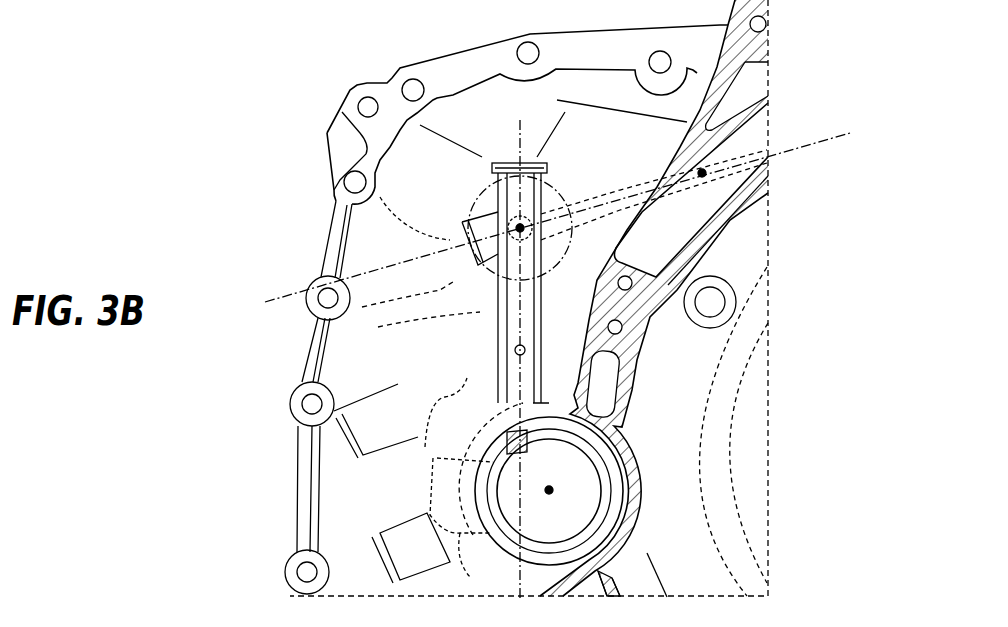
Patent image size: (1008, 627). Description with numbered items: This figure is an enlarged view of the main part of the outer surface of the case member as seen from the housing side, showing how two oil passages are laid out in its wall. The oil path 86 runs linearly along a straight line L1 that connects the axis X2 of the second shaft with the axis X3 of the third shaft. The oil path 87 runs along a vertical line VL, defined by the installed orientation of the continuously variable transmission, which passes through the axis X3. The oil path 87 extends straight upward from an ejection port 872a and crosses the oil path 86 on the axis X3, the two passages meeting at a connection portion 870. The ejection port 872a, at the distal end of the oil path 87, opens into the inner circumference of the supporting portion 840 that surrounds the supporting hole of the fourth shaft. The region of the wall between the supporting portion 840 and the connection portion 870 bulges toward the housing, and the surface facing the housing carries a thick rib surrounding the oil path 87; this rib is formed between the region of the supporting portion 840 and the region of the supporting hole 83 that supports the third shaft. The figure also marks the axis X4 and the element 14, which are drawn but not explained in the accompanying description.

The shaft hole 14 is at (568, 540).
The supporting hole 83 is at (493, 272).
The oil path 86 is at (603, 200).
The oil path 87 is at (497, 333).
The connection portion 870 is at (487, 203).
The ejection port 872a is at (441, 445).
The supporting portion 840 is at (460, 540).
The axis of the second shaft X2 is at (705, 178).
The axis of the third shaft X3 is at (526, 228).
The point X4 is at (554, 490).
The vertical line VL is at (519, 346).
The straight line L1 is at (575, 210).